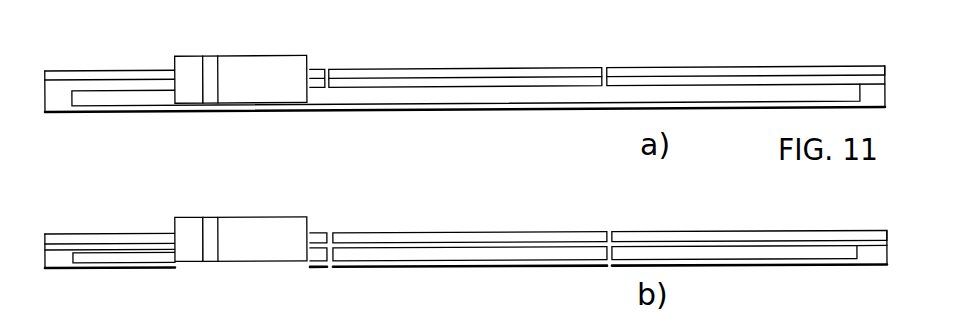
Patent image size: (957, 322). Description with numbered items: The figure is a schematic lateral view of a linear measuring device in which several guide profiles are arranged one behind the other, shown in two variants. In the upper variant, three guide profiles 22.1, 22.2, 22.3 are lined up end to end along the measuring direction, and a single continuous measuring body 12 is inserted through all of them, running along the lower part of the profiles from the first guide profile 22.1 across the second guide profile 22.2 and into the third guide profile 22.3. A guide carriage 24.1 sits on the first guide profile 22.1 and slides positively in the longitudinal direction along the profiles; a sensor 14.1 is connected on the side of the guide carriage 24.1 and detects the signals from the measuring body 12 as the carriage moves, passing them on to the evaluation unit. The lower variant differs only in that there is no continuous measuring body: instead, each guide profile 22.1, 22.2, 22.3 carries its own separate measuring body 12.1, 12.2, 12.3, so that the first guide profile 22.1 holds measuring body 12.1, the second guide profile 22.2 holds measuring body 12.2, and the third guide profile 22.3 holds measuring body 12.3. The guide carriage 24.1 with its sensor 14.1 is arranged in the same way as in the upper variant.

In FIG. 11a, the measuring body 12 is at (368, 96).
In FIG. 11b, the measuring body 12.1 is at (113, 258).
In FIG. 11b, the measuring body 12.2 is at (445, 253).
In FIG. 11b, the measuring body 12.3 is at (712, 251).
In FIG. 11a, the sensor 14.1 is at (190, 57).
In FIG. 11b, the sensor 14.1 is at (173, 222).
In FIG. 11a, the guide profile 22.1 is at (70, 71).
In FIG. 11b, the guide profile 22.1 is at (73, 235).
In FIG. 11a, the guide profile 22.2 is at (448, 68).
In FIG. 11b, the guide profile 22.2 is at (442, 233).
In FIG. 11a, the guide profile 22.3 is at (725, 66).
In FIG. 11b, the guide profile 22.3 is at (703, 236).
In FIG. 11a, the guide carriage 24.1 is at (263, 56).
In FIG. 11b, the guide carriage 24.1 is at (253, 222).